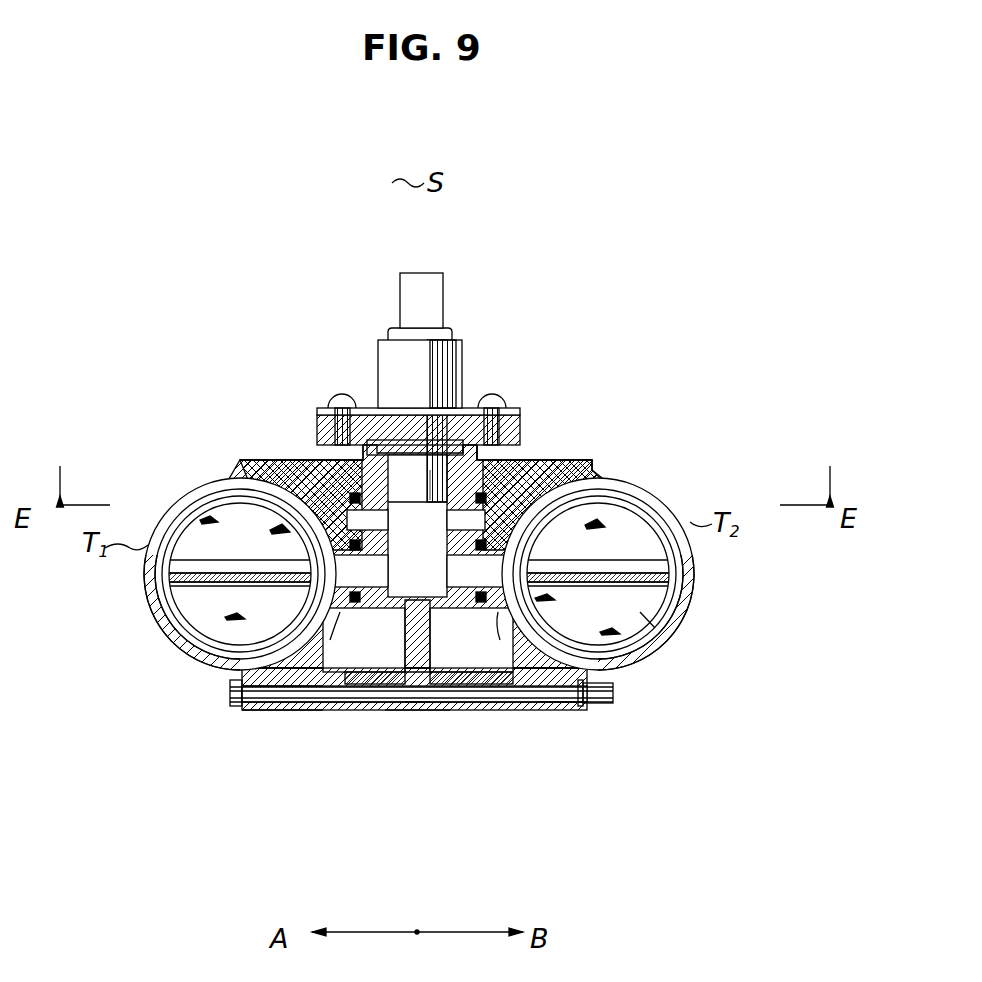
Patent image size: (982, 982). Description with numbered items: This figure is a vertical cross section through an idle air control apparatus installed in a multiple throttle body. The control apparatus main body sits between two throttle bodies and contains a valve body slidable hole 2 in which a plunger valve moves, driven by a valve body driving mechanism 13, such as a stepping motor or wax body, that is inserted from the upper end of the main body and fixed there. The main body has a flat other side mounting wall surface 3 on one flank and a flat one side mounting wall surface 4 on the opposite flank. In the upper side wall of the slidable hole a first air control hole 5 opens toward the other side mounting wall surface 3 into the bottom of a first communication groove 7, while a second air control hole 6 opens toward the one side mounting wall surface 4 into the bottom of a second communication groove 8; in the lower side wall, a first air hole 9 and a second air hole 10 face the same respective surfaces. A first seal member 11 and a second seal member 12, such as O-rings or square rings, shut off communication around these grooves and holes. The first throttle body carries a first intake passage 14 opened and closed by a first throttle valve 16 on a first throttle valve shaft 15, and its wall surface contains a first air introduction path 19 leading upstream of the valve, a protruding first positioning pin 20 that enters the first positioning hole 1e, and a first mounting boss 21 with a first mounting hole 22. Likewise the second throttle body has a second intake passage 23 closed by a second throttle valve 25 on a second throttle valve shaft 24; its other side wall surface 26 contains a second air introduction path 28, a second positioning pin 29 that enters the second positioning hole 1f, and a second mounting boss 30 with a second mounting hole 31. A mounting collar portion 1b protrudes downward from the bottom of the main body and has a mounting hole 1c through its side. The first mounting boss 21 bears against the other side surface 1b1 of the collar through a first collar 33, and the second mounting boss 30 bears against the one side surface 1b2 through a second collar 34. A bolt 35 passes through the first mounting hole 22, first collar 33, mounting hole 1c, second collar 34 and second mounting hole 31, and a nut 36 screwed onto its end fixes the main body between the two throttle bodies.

The mounting collar portion 1b is at (425, 710).
The another side surface of the mounting collar portion 1b1 is at (405, 710).
The one side surface of the mounting collar portion 1b2 is at (435, 710).
The mounting hole 1c is at (412, 710).
The first positioning hole 1e is at (335, 455).
The second positioning hole 1f is at (483, 460).
The valve body slidable hole 2 is at (430, 615).
The other side mounting wall surface 3 is at (237, 462).
The one side mounting wall surface 4 is at (560, 462).
The first air control hole 5 is at (417, 526).
The second air control hole 6 is at (426, 532).
The first communication groove 7 is at (300, 528).
The second communication groove 8 is at (592, 462).
The first air hole 9 is at (385, 580).
The second air hole 10 is at (476, 578).
The first seal member 11 is at (375, 612).
The second seal member 12 is at (455, 612).
The valve body driving mechanism 13 is at (458, 375).
The first intake passage 14 is at (170, 634).
The first throttle valve shaft 15 is at (212, 538).
The first throttle valve 16 is at (185, 598).
The first air introduction path 19 is at (312, 592).
The first positioning pin 20 is at (300, 460).
The first mounting boss 21 is at (263, 710).
The first mounting hole 22 is at (288, 710).
The second intake passage 23 is at (655, 640).
The second throttle valve shaft 24 is at (625, 575).
The second throttle valve 25 is at (680, 618).
The other side wall surface 26 is at (494, 643).
The second air introduction path 28 is at (514, 558).
The second positioning pin 29 is at (500, 462).
The second mounting boss 30 is at (536, 710).
The second mounting hole 31 is at (552, 710).
The first collar 33 is at (342, 710).
The second collar 34 is at (470, 710).
The bolt 35 is at (229, 710).
The nut 36 is at (600, 705).